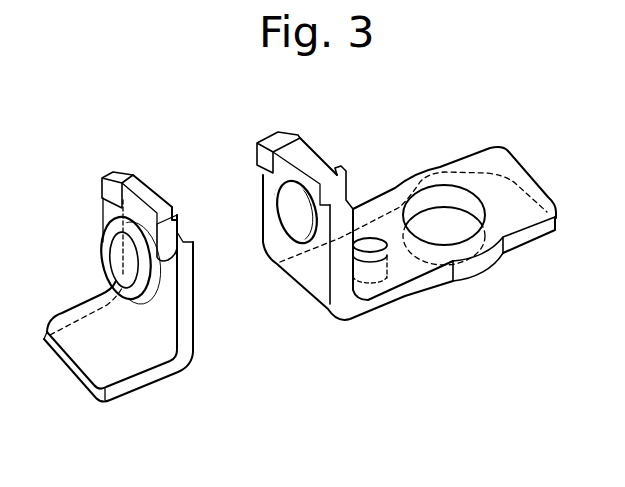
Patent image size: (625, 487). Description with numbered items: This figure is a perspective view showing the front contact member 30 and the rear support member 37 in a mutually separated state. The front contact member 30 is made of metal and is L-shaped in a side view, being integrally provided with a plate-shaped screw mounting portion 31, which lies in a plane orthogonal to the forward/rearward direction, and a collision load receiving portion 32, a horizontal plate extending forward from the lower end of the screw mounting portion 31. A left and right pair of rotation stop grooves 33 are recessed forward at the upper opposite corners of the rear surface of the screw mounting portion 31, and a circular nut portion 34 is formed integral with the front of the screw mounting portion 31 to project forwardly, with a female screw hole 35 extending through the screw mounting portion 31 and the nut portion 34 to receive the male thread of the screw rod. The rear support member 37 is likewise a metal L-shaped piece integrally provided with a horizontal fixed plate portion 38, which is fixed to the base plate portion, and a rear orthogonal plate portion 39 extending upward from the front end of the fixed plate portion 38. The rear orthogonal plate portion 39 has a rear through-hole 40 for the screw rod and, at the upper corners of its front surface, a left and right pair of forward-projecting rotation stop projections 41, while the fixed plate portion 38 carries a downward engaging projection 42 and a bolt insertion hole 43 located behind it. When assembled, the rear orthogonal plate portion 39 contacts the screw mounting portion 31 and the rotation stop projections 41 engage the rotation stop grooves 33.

The front contact member 30 is at (118, 337).
The collision load receiving portion 32 is at (135, 352).
The screw mounting portion 31 is at (168, 292).
The rotation stop grooves 33 is at (127, 175).
The nut portion 34 is at (122, 252).
The female screw hole 35 is at (140, 272).
The rear support member 37 is at (409, 252).
The fixed plate portion 38 is at (415, 288).
The rear orthogonal plate portion 39 is at (310, 160).
The rear through-hole 40 is at (297, 244).
The rotation stop projections 41 is at (260, 152).
The engaging projection 42 is at (383, 283).
The bolt insertion hole 43 is at (462, 218).